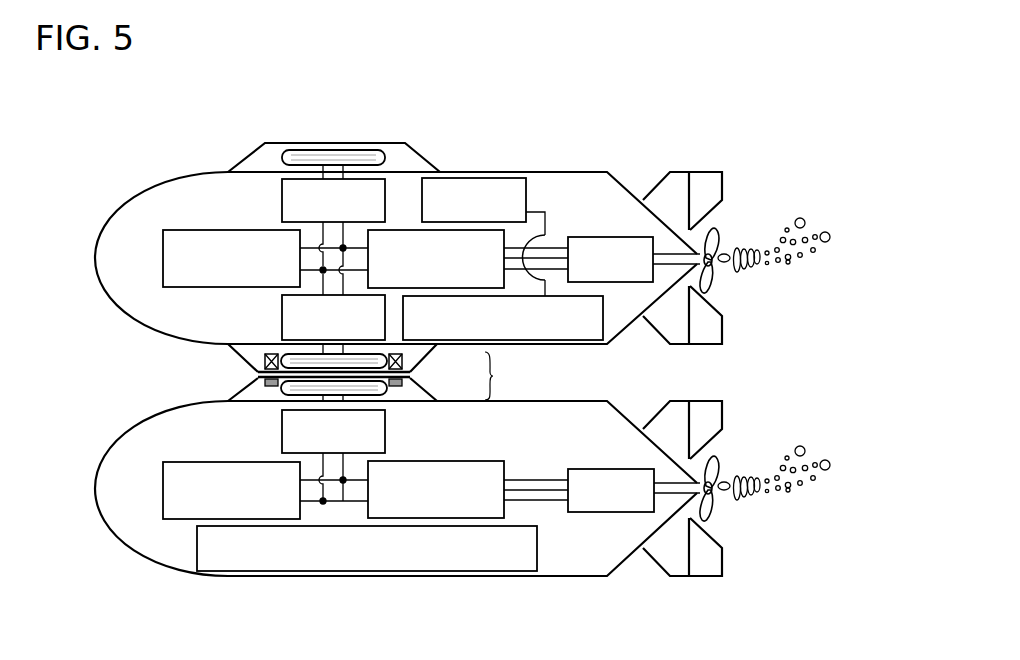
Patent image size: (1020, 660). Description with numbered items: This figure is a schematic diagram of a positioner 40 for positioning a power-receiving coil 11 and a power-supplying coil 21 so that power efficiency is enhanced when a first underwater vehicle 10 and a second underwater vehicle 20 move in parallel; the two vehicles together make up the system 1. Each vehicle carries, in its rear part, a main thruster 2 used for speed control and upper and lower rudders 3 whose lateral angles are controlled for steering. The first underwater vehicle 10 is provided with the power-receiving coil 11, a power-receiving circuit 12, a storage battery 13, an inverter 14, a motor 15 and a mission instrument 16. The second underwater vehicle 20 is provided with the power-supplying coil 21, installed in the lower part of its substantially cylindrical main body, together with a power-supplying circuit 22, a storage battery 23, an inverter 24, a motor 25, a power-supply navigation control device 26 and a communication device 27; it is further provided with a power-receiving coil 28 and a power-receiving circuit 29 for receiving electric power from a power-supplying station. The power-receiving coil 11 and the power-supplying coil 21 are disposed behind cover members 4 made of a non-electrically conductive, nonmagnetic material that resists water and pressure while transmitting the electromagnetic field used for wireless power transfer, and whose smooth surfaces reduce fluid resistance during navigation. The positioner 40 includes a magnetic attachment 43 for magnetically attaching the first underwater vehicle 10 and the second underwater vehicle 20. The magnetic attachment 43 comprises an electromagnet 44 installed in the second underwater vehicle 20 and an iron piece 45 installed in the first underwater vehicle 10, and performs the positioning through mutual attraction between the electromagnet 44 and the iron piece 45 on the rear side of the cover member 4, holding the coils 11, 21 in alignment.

The underwater vehicle system 1 is at (106, 166).
The main thruster 2 is at (722, 243).
The upper and lower rudders 3 is at (723, 188).
The cover member 4 is at (428, 160).
The first underwater vehicle 10 is at (108, 522).
The power-receiving coil 11 is at (280, 394).
The power-receiving circuit 12 is at (281, 432).
The storage battery 13 is at (162, 492).
The inverter 14 is at (441, 461).
The motor 15 is at (610, 469).
The mission instrument 16 is at (539, 548).
The second underwater vehicle 20 is at (110, 300).
The power-supplying coil 21 is at (280, 357).
The power-supplying circuit 22 is at (281, 322).
The storage battery 23 is at (162, 262).
The inverter 24 is at (403, 229).
The motor 25 is at (608, 237).
The power-supply navigation control device 26 is at (604, 332).
The communication device 27 is at (528, 192).
The power-receiving coil 28 is at (281, 158).
The power-receiving circuit 29 is at (281, 202).
The positioner 40 is at (247, 374).
The magnetic attachment 43 is at (506, 376).
The electromagnet 44 is at (403, 360).
The iron piece 45 is at (403, 383).